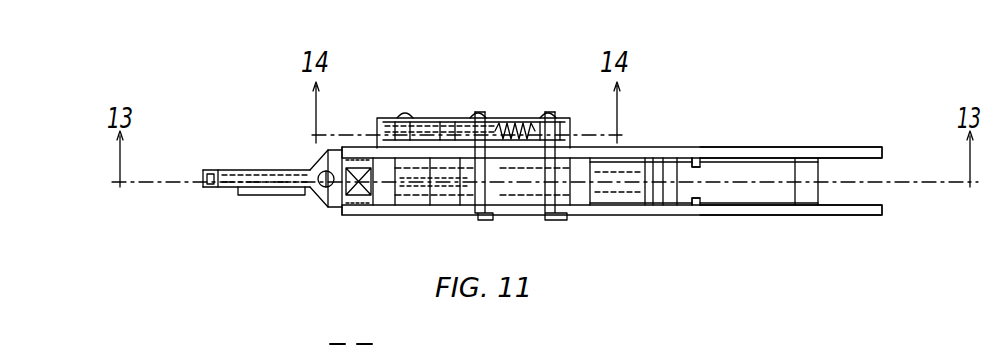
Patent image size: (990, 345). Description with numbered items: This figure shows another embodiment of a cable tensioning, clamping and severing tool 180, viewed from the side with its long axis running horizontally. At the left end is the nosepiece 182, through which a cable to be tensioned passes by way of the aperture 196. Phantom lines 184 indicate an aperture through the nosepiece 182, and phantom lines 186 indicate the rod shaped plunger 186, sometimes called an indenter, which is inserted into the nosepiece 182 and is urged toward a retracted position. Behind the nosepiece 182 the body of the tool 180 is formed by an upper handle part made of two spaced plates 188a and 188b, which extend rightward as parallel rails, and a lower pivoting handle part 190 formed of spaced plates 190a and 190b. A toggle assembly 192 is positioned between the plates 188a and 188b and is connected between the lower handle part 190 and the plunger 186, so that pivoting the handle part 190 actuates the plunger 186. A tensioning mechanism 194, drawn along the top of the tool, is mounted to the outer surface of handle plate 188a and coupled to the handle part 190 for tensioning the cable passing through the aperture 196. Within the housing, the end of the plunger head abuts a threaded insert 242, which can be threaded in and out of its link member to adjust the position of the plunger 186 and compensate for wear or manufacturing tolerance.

The cable tensioning, clamping and severing tool 180 is at (592, 228).
The nosepiece 182 is at (297, 168).
The phantom lines representing an aperture 184 is at (267, 191).
The plunger 186 is at (252, 170).
The spaced plate of upper handle part 188a is at (812, 147).
The spaced plate of upper handle part 188b is at (845, 215).
The lower pivoting handle part 190 is at (683, 198).
The spaced plate of lower handle part 190a is at (694, 161).
The spaced plate of lower handle part 190b is at (690, 208).
The toggle assembly 192 is at (490, 208).
The tensioning mechanism 194 is at (503, 118).
The aperture 196 is at (218, 189).
The threaded insert 242 is at (385, 207).